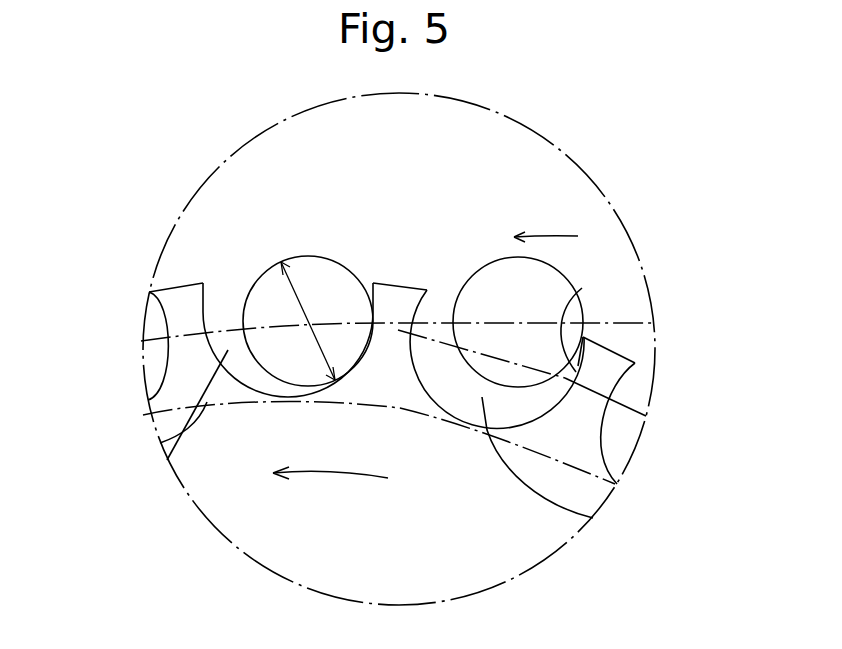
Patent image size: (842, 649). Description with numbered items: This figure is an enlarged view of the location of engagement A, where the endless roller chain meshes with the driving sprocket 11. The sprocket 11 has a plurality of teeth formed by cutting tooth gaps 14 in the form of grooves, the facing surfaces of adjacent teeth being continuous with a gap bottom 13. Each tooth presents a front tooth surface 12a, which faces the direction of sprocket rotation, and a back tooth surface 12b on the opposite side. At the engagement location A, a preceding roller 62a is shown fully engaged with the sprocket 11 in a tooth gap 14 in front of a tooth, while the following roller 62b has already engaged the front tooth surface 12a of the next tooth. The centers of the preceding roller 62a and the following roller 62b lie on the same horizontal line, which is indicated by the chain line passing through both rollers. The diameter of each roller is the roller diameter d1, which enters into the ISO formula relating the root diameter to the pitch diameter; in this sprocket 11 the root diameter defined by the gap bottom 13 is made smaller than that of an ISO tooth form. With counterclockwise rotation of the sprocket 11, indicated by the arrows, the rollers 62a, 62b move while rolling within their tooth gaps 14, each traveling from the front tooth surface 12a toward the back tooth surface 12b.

The location of engagement A is at (566, 152).
The driving sprocket 11 is at (420, 539).
The front tooth surface 12a is at (374, 302).
The back tooth surface 12b is at (203, 296).
The gap bottom 13 is at (263, 388).
The tooth gap 14 is at (160, 443).
The preceding roller 62a is at (258, 281).
The following roller 62b is at (484, 268).
The roller diameter d1 is at (316, 341).